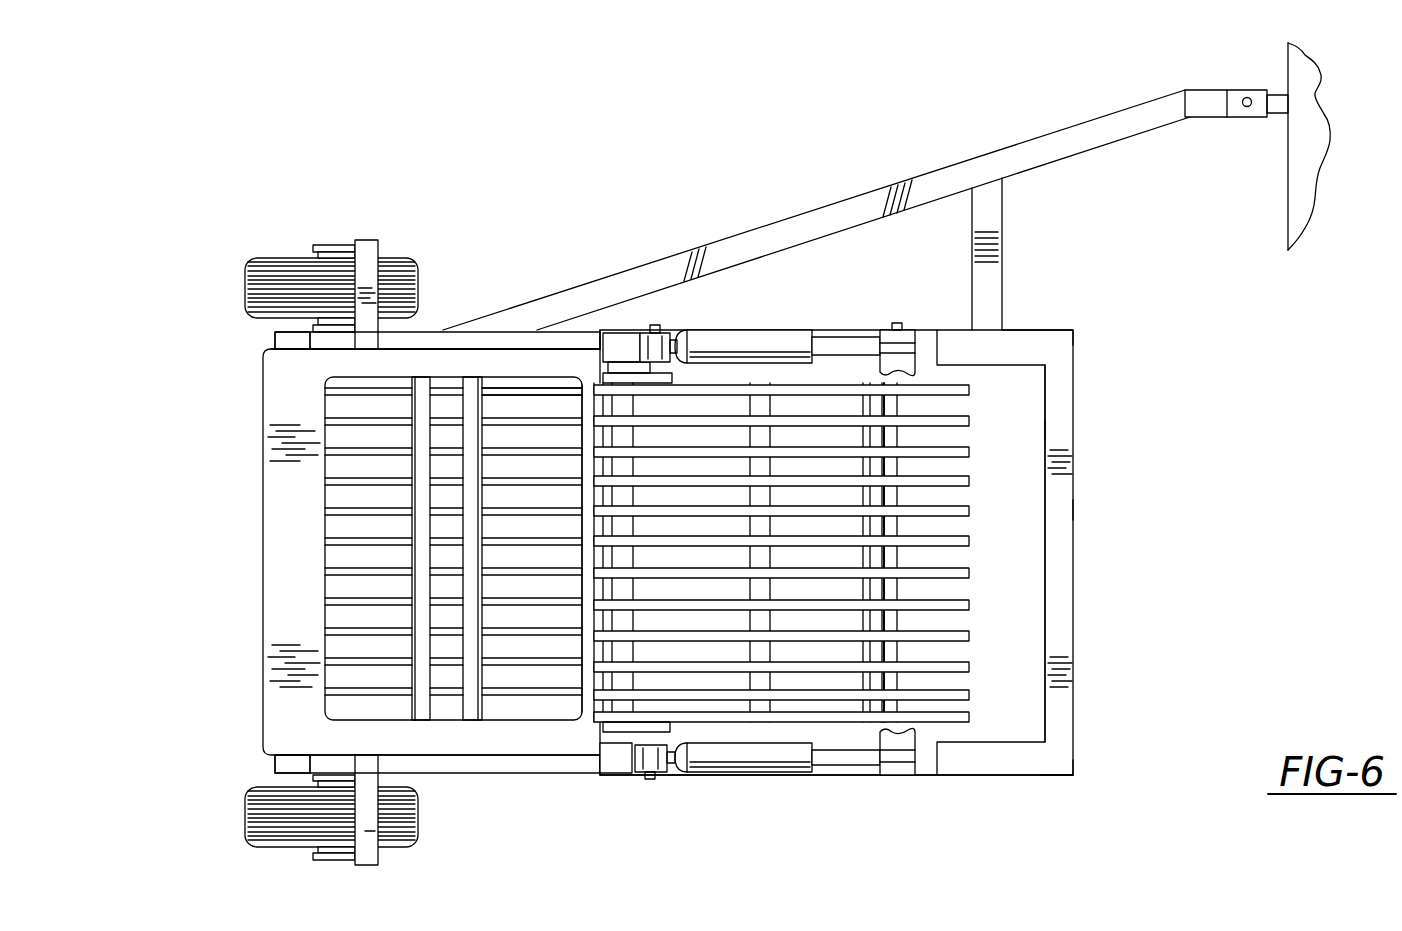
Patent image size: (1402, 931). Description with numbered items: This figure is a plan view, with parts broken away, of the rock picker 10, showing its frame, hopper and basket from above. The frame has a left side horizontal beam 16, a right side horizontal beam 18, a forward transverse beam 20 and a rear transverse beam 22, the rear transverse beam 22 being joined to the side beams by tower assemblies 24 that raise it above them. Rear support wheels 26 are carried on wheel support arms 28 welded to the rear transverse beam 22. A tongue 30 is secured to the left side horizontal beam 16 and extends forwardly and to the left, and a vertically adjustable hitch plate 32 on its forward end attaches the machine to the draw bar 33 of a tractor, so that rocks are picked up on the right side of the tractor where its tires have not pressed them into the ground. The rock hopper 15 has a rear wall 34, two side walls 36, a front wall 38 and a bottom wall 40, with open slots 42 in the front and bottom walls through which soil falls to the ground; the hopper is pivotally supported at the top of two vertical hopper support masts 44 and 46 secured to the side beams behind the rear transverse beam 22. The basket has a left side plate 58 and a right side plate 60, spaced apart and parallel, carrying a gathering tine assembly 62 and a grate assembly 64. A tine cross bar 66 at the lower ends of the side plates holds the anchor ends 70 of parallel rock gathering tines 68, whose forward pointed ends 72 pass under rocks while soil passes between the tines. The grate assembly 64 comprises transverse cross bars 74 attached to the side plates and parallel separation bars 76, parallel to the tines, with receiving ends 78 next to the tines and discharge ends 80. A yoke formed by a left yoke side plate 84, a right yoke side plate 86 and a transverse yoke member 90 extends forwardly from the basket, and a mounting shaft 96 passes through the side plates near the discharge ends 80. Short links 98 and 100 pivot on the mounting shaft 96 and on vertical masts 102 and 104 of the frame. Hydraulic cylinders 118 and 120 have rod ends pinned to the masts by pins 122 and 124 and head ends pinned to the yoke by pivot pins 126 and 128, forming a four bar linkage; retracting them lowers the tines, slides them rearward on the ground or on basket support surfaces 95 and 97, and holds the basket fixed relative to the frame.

The rock picker 10 is at (1255, 496).
The rock hopper 15 is at (478, 347).
The left side horizontal beam 16 is at (1057, 330).
The right side horizontal beam 18 is at (1060, 775).
The forward transverse beam 20 is at (1073, 550).
The rear transverse beam 22 is at (372, 240).
The tower assembly 24 is at (400, 338).
The rear support wheel 26 is at (400, 258).
The wheel support arm 28 is at (340, 245).
The tongue 30 is at (1040, 137).
The hitch plate 32 is at (1243, 90).
The draw bar 33 is at (1270, 118).
The rear wall 34 is at (340, 492).
The side wall 36 is at (340, 383).
The front wall 38 is at (577, 707).
The bottom wall 40 is at (440, 585).
The open slot 42 is at (530, 393).
The hopper support mast 44 is at (285, 320).
The hopper support mast 46 is at (273, 767).
The left side plate 58 is at (1045, 370).
The right side plate 60 is at (979, 726).
The gathering tine assembly 62 is at (995, 430).
The grate assembly 64 is at (866, 420).
The tine cross bar 66 is at (888, 558).
The rock gathering tine 68 is at (957, 657).
The anchor end 70 is at (890, 607).
The forward pointed end 72 is at (969, 697).
The transverse cross bar 74 is at (770, 410).
The separation bar 76 is at (840, 467).
The receiving end 78 is at (975, 392).
The discharge end 80 is at (600, 333).
The left yoke side plate 84 is at (910, 332).
The right yoke side plate 86 is at (933, 772).
The transverse yoke member 90 is at (918, 372).
The basket support surface 95 is at (975, 328).
The mounting shaft 96 is at (768, 370).
The basket support surface 97 is at (945, 775).
The short link 98 is at (633, 412).
The short link 100 is at (606, 775).
The vertical mast 102 is at (628, 333).
The vertical mast 104 is at (618, 775).
The hydraulic cylinder 118 is at (815, 330).
The hydraulic cylinder 120 is at (743, 762).
The pin 122 is at (656, 327).
The pin 124 is at (648, 775).
The pivot pin 126 is at (893, 323).
The pivot pin 128 is at (890, 780).